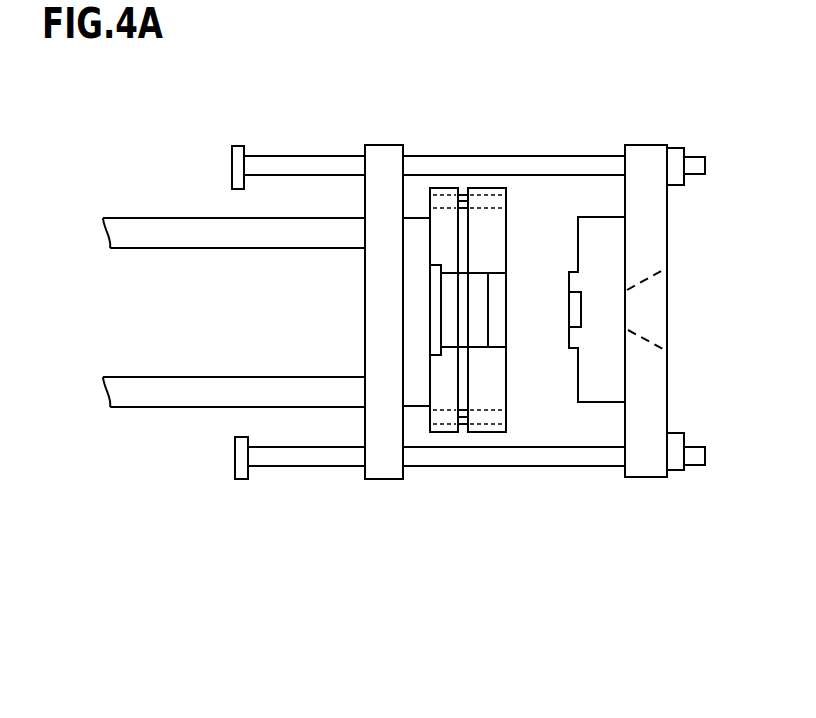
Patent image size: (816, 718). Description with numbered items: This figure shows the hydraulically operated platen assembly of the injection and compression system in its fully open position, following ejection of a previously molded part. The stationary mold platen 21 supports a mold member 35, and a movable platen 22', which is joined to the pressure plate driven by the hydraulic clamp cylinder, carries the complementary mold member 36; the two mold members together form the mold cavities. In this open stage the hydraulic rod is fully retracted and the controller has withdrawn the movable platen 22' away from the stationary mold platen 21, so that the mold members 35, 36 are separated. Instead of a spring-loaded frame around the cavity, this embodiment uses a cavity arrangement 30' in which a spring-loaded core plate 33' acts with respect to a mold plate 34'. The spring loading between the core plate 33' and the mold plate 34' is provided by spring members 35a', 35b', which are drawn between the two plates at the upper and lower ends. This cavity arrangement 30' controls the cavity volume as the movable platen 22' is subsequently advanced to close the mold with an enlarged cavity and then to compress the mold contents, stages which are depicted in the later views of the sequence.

The stationary mold platen 21 is at (667, 470).
The movable platen 22' is at (379, 346).
The cavity arrangement 30' is at (576, 492).
The spring-loaded core plate 33' is at (432, 259).
The mold plate 34' is at (511, 310).
The mold member 35 is at (615, 313).
The spring member 35a' is at (489, 259).
The spring member 35b' is at (468, 461).
The complementary mold member 36 is at (475, 313).